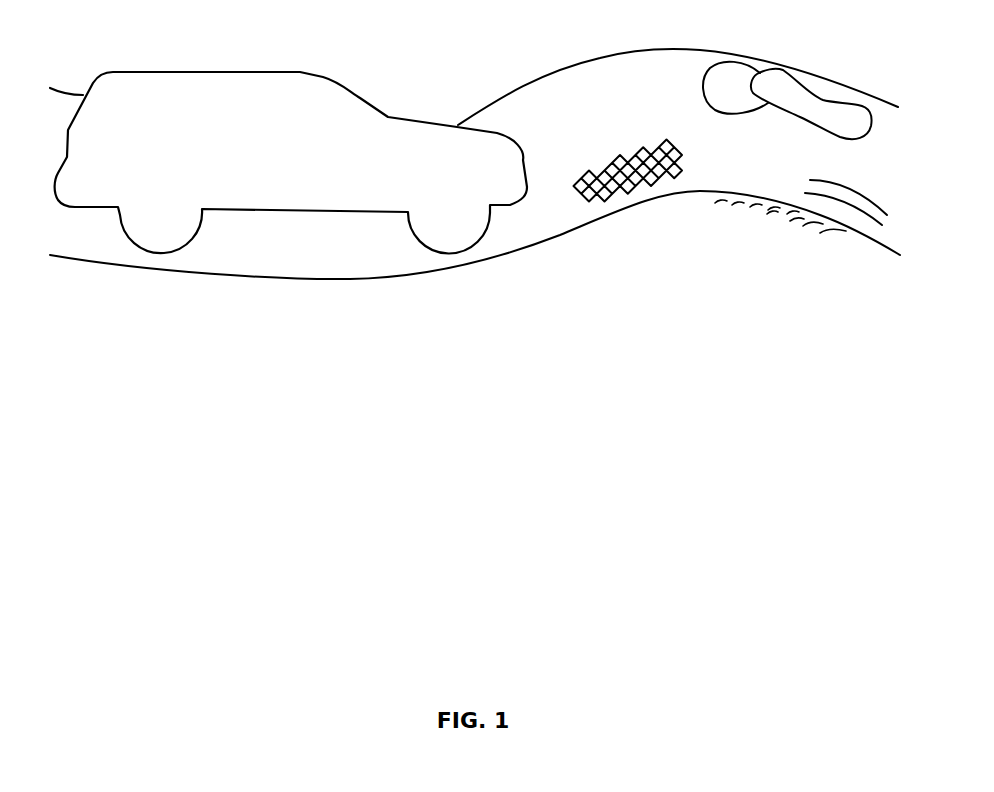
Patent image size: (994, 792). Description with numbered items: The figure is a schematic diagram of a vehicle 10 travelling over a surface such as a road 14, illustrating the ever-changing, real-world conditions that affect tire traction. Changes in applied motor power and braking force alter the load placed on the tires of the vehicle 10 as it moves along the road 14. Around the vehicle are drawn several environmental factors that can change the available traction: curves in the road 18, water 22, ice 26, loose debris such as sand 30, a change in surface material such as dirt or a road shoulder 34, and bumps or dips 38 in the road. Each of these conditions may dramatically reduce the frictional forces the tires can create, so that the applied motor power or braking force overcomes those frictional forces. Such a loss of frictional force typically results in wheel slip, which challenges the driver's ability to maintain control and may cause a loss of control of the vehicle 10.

The vehicle 10 is at (175, 82).
The road 14 is at (400, 263).
The curves in the road 18 is at (523, 97).
The water 22 is at (722, 63).
The ice 26 is at (807, 92).
The sand 30 is at (640, 188).
The road shoulder 34 is at (768, 212).
The bumps or dips 38 is at (865, 205).